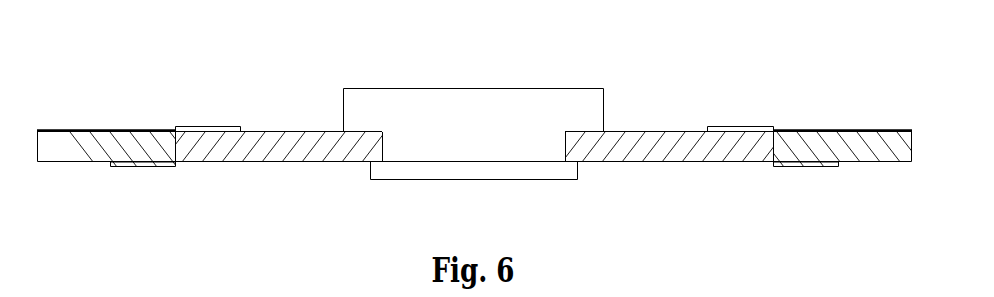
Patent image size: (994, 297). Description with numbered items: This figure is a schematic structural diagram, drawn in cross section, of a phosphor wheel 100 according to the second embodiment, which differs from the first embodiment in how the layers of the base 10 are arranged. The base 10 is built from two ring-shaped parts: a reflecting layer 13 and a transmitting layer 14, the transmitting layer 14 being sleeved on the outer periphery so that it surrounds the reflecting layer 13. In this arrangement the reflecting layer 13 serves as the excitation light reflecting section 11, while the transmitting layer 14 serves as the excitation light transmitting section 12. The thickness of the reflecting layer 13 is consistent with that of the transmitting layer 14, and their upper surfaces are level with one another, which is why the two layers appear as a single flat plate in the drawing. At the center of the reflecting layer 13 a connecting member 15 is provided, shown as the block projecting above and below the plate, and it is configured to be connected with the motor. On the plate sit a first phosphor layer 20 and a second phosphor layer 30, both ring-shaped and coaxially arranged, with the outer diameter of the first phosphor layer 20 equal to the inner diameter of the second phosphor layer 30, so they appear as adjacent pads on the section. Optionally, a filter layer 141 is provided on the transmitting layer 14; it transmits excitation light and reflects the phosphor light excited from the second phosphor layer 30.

The phosphor wheel 100 is at (448, 40).
The base 10 is at (88, 198).
The excitation light reflecting section 11 is at (297, 115).
The excitation light transmitting section 12 is at (829, 114).
The reflecting layer 13 is at (207, 163).
The transmitting layer 14 is at (86, 165).
The filter layer 141 is at (878, 128).
The connecting member 15 is at (443, 102).
The first phosphor layer 20 is at (200, 126).
The second phosphor layer 30 is at (785, 168).